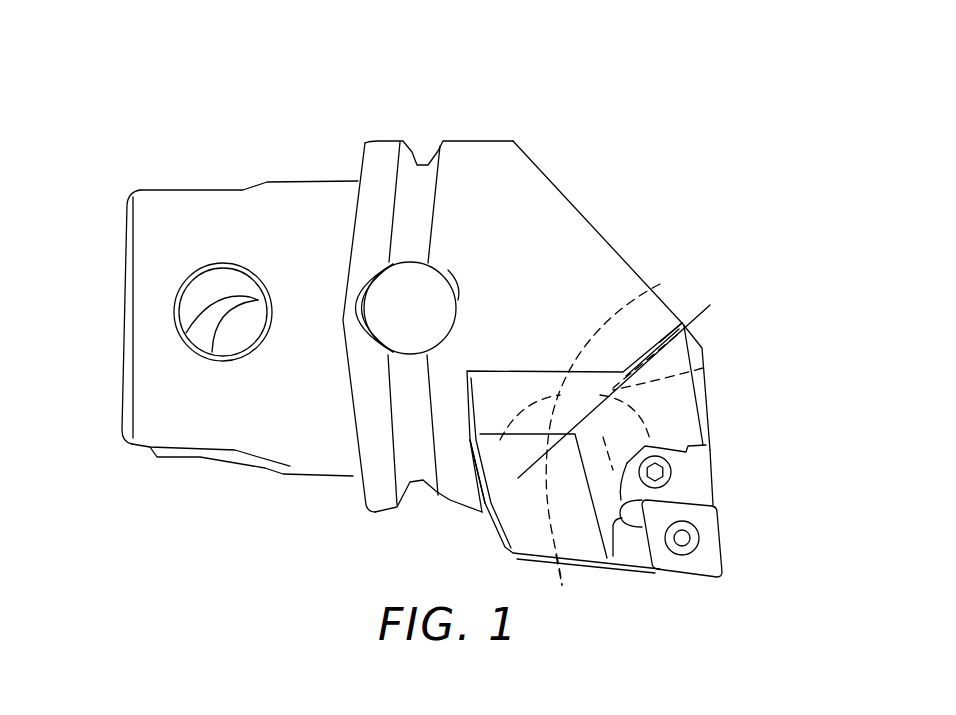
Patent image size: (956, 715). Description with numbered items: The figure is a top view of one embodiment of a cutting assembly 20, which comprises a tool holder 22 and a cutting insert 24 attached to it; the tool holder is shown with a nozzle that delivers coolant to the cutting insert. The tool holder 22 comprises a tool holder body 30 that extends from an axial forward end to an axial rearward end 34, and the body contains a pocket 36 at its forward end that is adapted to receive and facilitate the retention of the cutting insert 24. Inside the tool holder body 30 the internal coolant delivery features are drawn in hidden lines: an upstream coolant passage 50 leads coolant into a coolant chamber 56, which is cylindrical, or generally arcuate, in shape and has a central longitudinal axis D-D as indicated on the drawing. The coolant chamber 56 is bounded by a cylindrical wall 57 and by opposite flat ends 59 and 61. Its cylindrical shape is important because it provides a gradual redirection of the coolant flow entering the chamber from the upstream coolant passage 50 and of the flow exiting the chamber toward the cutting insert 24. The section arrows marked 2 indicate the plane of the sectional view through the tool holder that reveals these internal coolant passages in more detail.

The section line 2- 2 is at (300, 153).
The cutting assembly 20 is at (128, 88).
The tool holder 22 is at (312, 486).
The cutting insert 24 is at (682, 588).
The tool holder body 30 is at (576, 219).
The axial rearward end 34 is at (118, 322).
The pocket 36 is at (713, 506).
The upstream coolant passage 50 is at (600, 417).
The coolant chamber 56 is at (703, 368).
The cylindrical wall 57 is at (564, 588).
The flat end 59 is at (483, 487).
The flat end 61 is at (688, 321).